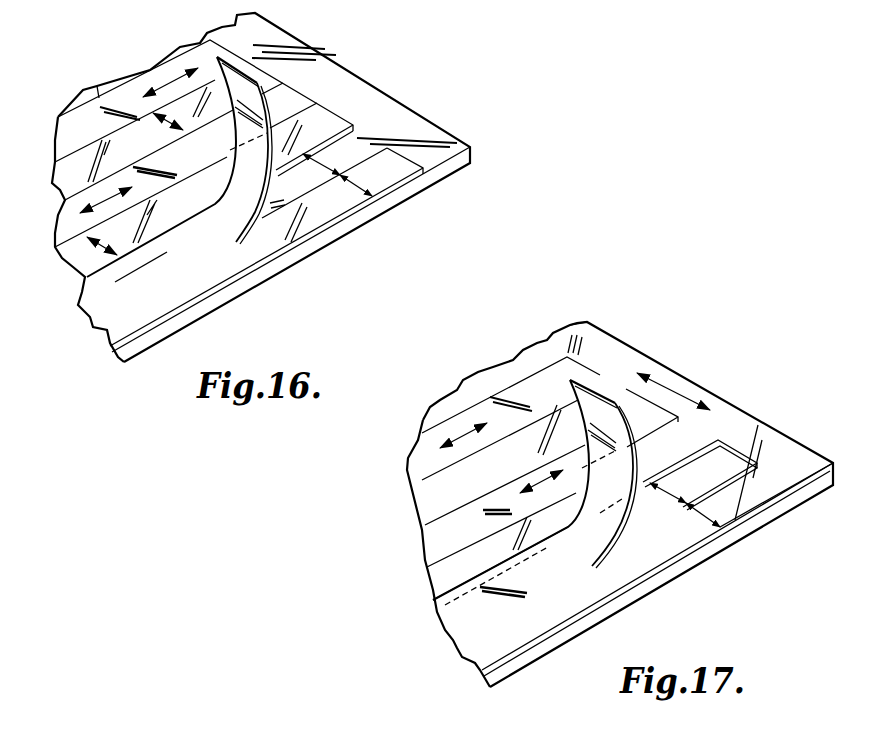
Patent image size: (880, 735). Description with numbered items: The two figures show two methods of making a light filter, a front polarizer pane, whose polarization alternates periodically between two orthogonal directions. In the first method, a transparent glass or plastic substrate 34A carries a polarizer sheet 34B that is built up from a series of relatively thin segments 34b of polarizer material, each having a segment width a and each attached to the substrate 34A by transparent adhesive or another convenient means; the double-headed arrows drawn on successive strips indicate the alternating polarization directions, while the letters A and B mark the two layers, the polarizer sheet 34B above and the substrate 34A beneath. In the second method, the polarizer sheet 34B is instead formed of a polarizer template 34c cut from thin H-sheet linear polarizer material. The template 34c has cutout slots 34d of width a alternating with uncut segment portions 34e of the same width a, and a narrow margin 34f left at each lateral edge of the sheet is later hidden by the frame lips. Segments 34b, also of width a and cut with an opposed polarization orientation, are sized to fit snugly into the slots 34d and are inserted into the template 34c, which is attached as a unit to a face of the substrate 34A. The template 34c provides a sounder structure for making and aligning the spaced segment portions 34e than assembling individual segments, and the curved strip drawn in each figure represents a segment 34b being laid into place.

In FIG. 16, the substrate 34A is at (407, 195).
In FIG. 17, the substrate 34A is at (755, 521).
In FIG. 16, the polarizer sheet 34B is at (300, 80).
In FIG. 17, the polarizer sheet 34B is at (802, 493).
In FIG. 16, the segments 34b is at (230, 210).
In FIG. 17, the segments 34b is at (577, 551).
In FIG. 17, the polarizer template 34c is at (690, 534).
In FIG. 17, the cutout slots 34d is at (723, 467).
In FIG. 17, the uncut segment portions 34e is at (615, 388).
In FIG. 17, the narrow margin 34f is at (590, 320).
In FIG. 16, the segment width a is at (337, 175).
In FIG. 17, the segment width a is at (685, 504).
In FIG. 16, the strip layer A is at (82, 282).
In FIG. 17, the strip layer A is at (452, 613).
In FIG. 16, the substrate layer B is at (88, 332).
In FIG. 17, the substrate layer B is at (473, 650).